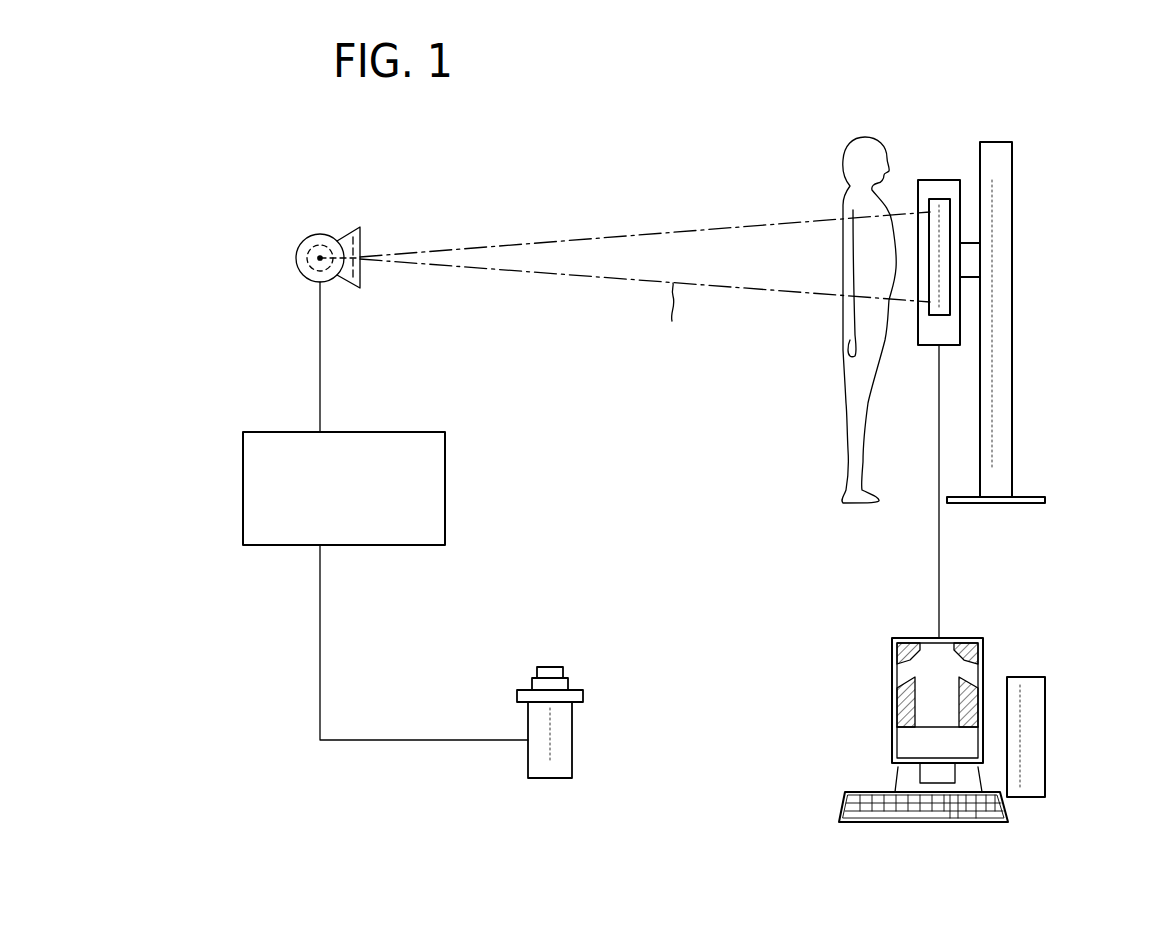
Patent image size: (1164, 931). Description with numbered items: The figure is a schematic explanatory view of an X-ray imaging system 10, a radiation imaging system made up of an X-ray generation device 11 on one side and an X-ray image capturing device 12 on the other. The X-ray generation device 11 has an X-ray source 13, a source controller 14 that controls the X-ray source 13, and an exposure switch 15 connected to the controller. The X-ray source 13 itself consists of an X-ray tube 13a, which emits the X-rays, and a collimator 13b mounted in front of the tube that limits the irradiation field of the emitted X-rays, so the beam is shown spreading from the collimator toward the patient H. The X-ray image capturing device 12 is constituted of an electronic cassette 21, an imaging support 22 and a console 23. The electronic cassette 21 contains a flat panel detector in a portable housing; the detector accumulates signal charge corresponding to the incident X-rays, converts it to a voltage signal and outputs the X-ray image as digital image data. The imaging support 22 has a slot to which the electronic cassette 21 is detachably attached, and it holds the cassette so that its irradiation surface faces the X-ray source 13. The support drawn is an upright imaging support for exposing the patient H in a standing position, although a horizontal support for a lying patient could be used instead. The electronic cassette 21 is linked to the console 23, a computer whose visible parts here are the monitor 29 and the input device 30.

The X-ray imaging system 10 is at (553, 136).
The X-ray generation device 11 is at (263, 149).
The X-ray image capturing device 12 is at (1113, 136).
The X-ray source 13 is at (307, 226).
The X-ray tube 13a is at (295, 258).
The collimator 13b is at (362, 241).
The source controller 14 is at (287, 432).
The exposure switch 15 is at (528, 764).
The electronic cassette 21 is at (939, 199).
The imaging support 22 is at (1012, 213).
The console 23 is at (992, 644).
The monitor 29 is at (898, 712).
The input device 30 is at (935, 822).
The patient H is at (853, 394).